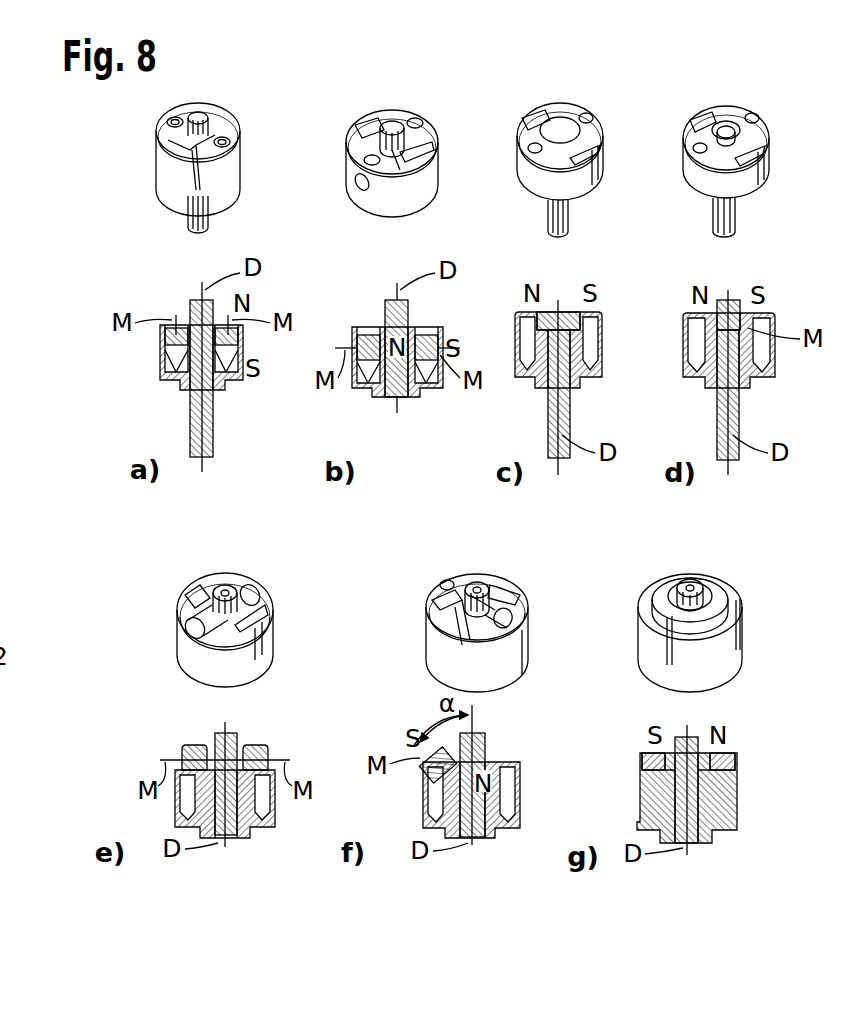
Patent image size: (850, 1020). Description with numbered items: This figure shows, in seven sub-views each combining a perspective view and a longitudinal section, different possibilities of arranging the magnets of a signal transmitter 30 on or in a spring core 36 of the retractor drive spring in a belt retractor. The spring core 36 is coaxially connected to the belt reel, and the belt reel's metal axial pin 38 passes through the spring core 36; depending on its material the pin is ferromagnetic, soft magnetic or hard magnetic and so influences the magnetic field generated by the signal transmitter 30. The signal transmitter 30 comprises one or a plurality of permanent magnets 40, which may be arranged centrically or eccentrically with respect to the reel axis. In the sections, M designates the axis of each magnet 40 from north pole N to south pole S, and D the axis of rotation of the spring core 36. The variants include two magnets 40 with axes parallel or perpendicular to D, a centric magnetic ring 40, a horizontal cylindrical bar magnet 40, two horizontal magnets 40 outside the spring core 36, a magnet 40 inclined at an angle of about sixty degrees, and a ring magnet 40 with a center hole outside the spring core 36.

The signal transmitter 30 is at (240, 112).
The spring core 36 is at (165, 165).
The axial pin 38 is at (188, 213).
The permanent magnet 40 is at (170, 122).